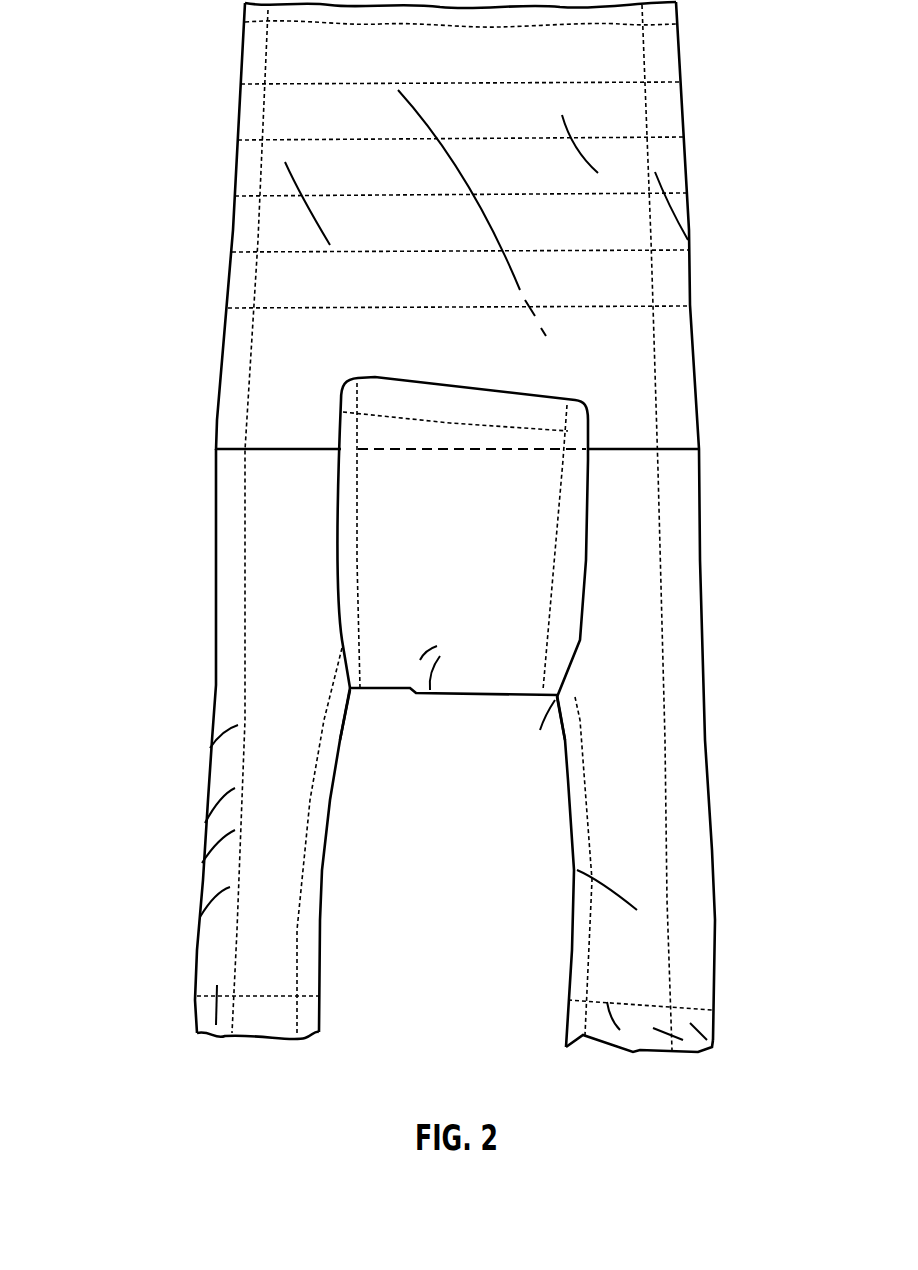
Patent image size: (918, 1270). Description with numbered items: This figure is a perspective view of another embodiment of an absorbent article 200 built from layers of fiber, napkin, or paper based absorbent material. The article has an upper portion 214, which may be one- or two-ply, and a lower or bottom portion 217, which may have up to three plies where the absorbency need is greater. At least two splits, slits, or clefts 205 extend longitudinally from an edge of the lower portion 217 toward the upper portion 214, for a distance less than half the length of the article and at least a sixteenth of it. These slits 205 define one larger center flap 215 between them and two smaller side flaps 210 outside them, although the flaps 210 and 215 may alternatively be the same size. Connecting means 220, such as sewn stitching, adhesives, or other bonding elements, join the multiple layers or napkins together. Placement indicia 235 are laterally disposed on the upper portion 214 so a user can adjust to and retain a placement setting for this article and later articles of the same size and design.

The absorbent article 200 is at (134, 697).
The slits 205 is at (350, 690).
The small flaps 210 is at (316, 866).
The upper portion 214 is at (344, 356).
The larger flap 215 is at (370, 558).
The lower portion 217 is at (645, 679).
The connecting means 220 is at (565, 442).
The placement indicia 235 is at (270, 140).